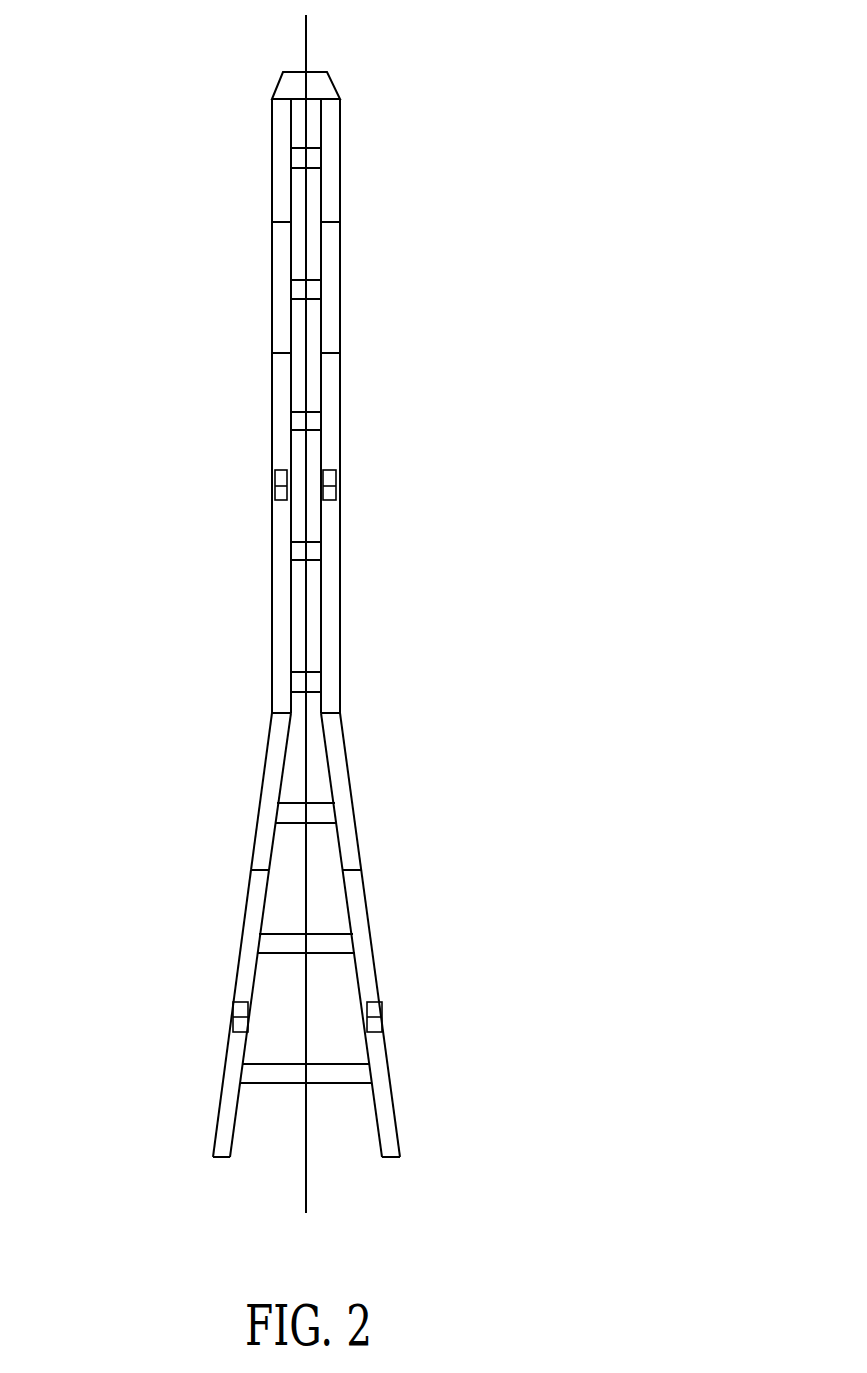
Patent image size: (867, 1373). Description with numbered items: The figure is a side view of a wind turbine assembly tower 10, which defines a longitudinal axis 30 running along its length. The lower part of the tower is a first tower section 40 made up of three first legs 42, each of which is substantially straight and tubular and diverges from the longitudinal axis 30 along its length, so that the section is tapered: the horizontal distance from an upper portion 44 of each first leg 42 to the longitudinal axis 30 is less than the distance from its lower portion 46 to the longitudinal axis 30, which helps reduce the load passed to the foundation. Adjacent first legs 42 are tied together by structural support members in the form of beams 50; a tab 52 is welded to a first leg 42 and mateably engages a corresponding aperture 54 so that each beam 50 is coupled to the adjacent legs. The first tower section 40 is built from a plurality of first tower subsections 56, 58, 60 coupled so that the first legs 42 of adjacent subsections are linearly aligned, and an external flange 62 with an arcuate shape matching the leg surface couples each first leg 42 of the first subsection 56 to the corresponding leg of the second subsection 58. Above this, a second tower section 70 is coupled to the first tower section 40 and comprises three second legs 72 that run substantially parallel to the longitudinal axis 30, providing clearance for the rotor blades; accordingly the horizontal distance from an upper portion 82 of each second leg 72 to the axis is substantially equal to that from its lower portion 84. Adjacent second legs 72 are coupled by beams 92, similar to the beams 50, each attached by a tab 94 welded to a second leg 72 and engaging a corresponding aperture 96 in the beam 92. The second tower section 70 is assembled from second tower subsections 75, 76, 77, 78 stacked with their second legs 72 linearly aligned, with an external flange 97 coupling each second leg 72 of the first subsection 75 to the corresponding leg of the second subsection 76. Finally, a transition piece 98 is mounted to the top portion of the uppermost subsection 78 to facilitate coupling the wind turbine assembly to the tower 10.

The tower 10 is at (485, 282).
The longitudinal axis 30 is at (307, 30).
The first tower section 40 is at (450, 845).
The first leg 42 is at (383, 1083).
The upper portion 44 is at (395, 1018).
The lower portion 46 is at (415, 1140).
The beam 50 is at (277, 1075).
The tab 52 is at (372, 1082).
The aperture 54 is at (370, 1063).
The first tower first subsection 56 is at (262, 855).
The first tower second subsection 58 is at (243, 968).
The first tower third subsection 60 is at (230, 1070).
The external flange 62 is at (380, 1013).
The second tower section 70 is at (185, 325).
The second leg 72 is at (331, 594).
The second tower first subsection 75 is at (280, 638).
The second tower second subsection 76 is at (280, 440).
The second tower third subsection 77 is at (280, 254).
The second tower fourth subsection 78 is at (280, 162).
The upper portion 82 is at (345, 523).
The lower portion 84 is at (331, 659).
The beam 92 is at (305, 413).
The tab 94 is at (317, 430).
The aperture 96 is at (311, 415).
The external flange 97 is at (277, 487).
The transition piece 98 is at (322, 85).